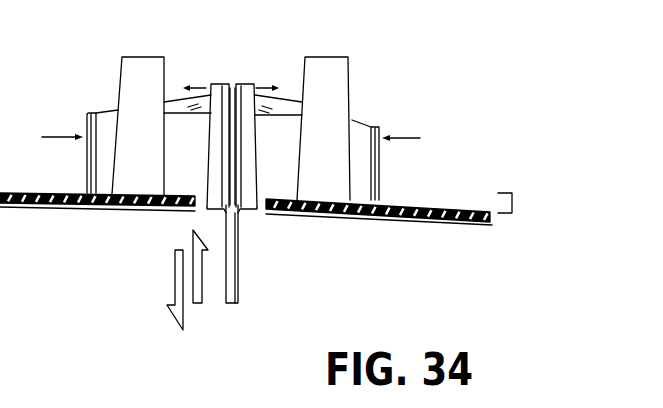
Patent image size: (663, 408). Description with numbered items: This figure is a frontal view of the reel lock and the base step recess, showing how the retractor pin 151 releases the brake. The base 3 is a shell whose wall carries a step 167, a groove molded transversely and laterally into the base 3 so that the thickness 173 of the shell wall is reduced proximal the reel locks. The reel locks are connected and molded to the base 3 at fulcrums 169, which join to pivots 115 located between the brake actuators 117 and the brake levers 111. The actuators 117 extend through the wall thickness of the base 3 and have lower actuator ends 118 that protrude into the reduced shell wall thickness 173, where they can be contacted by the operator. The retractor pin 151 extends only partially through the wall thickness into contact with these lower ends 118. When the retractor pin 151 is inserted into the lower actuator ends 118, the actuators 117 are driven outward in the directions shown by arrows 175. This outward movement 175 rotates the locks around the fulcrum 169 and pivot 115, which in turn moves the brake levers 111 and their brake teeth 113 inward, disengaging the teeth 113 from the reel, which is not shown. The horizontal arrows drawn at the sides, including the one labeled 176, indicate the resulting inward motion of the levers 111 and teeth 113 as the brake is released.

The base 3 is at (427, 224).
The brake levers 111 is at (353, 120).
The brake teeth 113 is at (380, 182).
The pivots 115 is at (352, 88).
The brake actuators 117 is at (220, 86).
The lower actuator ends 118 is at (207, 212).
The retractor pin 151 is at (238, 277).
The step 167 is at (99, 207).
The fulcrums 169 is at (178, 127).
The thickness 173 is at (513, 203).
The arrows 175 is at (265, 72).
The left flange 176 is at (64, 128).